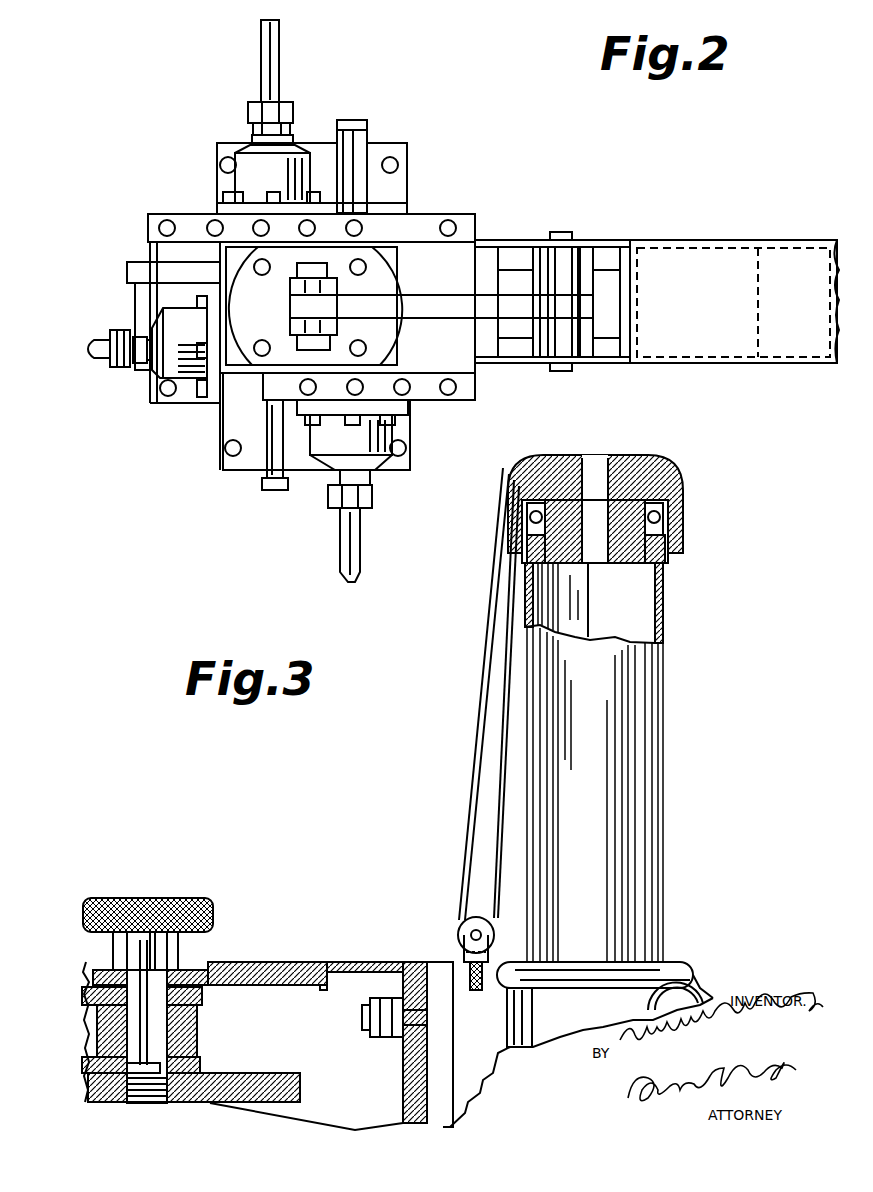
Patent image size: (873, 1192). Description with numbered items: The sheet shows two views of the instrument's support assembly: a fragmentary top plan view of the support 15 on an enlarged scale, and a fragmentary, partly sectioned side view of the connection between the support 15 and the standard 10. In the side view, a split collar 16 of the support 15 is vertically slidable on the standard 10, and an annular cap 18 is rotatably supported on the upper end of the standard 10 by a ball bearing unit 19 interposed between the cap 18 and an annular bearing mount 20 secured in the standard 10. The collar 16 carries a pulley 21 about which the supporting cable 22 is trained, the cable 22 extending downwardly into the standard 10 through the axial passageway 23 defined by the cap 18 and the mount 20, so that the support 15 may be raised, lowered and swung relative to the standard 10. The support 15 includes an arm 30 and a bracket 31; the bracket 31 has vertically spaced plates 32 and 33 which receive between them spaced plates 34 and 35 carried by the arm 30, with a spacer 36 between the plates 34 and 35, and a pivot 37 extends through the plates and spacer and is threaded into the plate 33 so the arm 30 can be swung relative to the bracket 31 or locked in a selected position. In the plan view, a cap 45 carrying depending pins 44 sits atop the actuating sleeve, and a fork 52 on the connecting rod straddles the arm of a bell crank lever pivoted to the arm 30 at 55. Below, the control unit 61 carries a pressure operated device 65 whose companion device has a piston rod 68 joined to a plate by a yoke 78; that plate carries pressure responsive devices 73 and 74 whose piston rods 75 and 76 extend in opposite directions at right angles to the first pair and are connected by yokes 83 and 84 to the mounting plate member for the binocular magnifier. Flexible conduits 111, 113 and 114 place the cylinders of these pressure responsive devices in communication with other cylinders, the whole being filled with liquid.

In FIG. 3, the standard 10 is at (666, 766).
In FIG. 2, the support 15 is at (738, 240).
In FIG. 3, the support 15 is at (284, 958).
In FIG. 3, the split collar 16 is at (648, 1002).
In FIG. 3, the annular cap 18 is at (685, 492).
In FIG. 3, the ball bearing unit 19 is at (685, 522).
In FIG. 3, the annular bearing mount 20 is at (653, 562).
In FIG. 3, the pulley 21 is at (458, 935).
In FIG. 3, the supporting cable 22 is at (468, 802).
In FIG. 3, the axial passageway 23 is at (600, 500).
In FIG. 2, the arm 30 is at (665, 240).
In FIG. 3, the bracket 31 is at (362, 977).
In FIG. 3, the plate 32 is at (316, 992).
In FIG. 3, the plate 33 is at (300, 1090).
In FIG. 3, the plate 34 is at (207, 1003).
In FIG. 3, the plate 35 is at (200, 1064).
In FIG. 3, the spacer 36 is at (197, 1032).
In FIG. 3, the pivot 37 is at (170, 895).
In FIG. 2, the depending pins 44 is at (262, 278).
In FIG. 2, the cap 45 is at (375, 280).
In FIG. 2, the fork 52 is at (335, 326).
In FIG. 2, the pivot 55 is at (567, 236).
In FIG. 2, the control unit 61 is at (196, 408).
In FIG. 2, the pressure operated device 65 is at (178, 365).
In FIG. 2, the piston rod 68 is at (161, 262).
In FIG. 2, the pressure responsive device 73 is at (243, 177).
In FIG. 2, the pressure responsive device 74 is at (375, 465).
In FIG. 2, the piston rod 75 is at (272, 445).
In FIG. 2, the piston rod 76 is at (352, 165).
In FIG. 2, the yoke 78 is at (138, 305).
In FIG. 2, the yoke 83 is at (307, 482).
In FIG. 2, the yoke 84 is at (317, 137).
In FIG. 2, the flexible conduit 111 is at (99, 362).
In FIG. 2, the flexible conduit 113 is at (282, 80).
In FIG. 2, the flexible conduit 114 is at (352, 540).